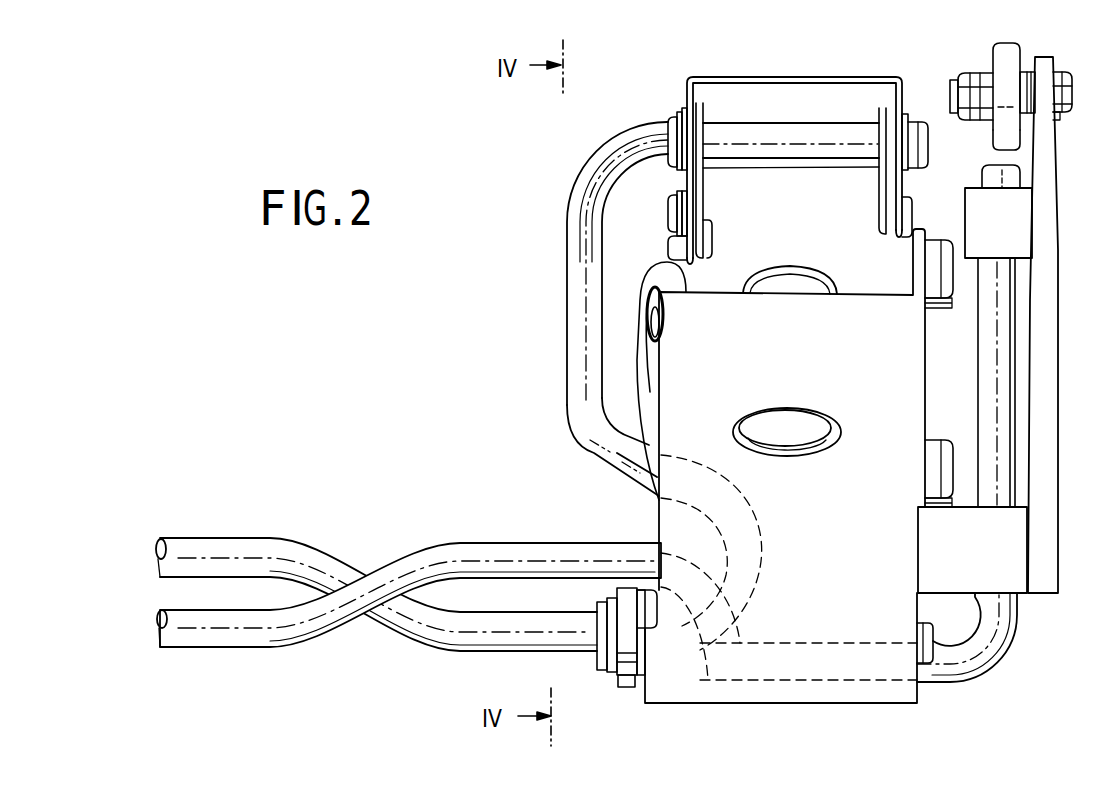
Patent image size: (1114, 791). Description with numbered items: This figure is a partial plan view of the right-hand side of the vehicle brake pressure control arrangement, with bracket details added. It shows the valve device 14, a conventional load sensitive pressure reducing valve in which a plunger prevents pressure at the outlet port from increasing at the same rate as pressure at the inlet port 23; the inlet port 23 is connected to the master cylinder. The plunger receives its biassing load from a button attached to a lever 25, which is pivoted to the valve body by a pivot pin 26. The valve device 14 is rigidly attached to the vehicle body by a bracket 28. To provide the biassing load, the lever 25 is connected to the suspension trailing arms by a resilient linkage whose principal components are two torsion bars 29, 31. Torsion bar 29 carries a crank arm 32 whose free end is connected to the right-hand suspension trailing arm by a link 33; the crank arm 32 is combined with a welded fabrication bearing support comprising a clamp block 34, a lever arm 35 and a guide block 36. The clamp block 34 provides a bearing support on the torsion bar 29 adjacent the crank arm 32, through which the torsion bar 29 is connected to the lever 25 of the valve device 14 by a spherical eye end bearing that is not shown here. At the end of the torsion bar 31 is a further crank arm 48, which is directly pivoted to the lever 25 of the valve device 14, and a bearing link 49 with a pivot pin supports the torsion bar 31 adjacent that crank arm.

The valve device 14 is at (720, 204).
The inlet port 23 is at (645, 293).
The lever 25 is at (686, 91).
The pivot pin 26 is at (670, 226).
The bracket 28 is at (785, 466).
The torsion bar 29 is at (418, 560).
The torsion bar 31 is at (440, 640).
The crank arm 32 is at (992, 358).
The link 33 is at (993, 134).
The clamp block 34 is at (972, 550).
The lever arm 35 is at (1052, 178).
The guide block 36 is at (998, 223).
The crank arm 48 is at (580, 348).
The bearing link 49 is at (627, 688).